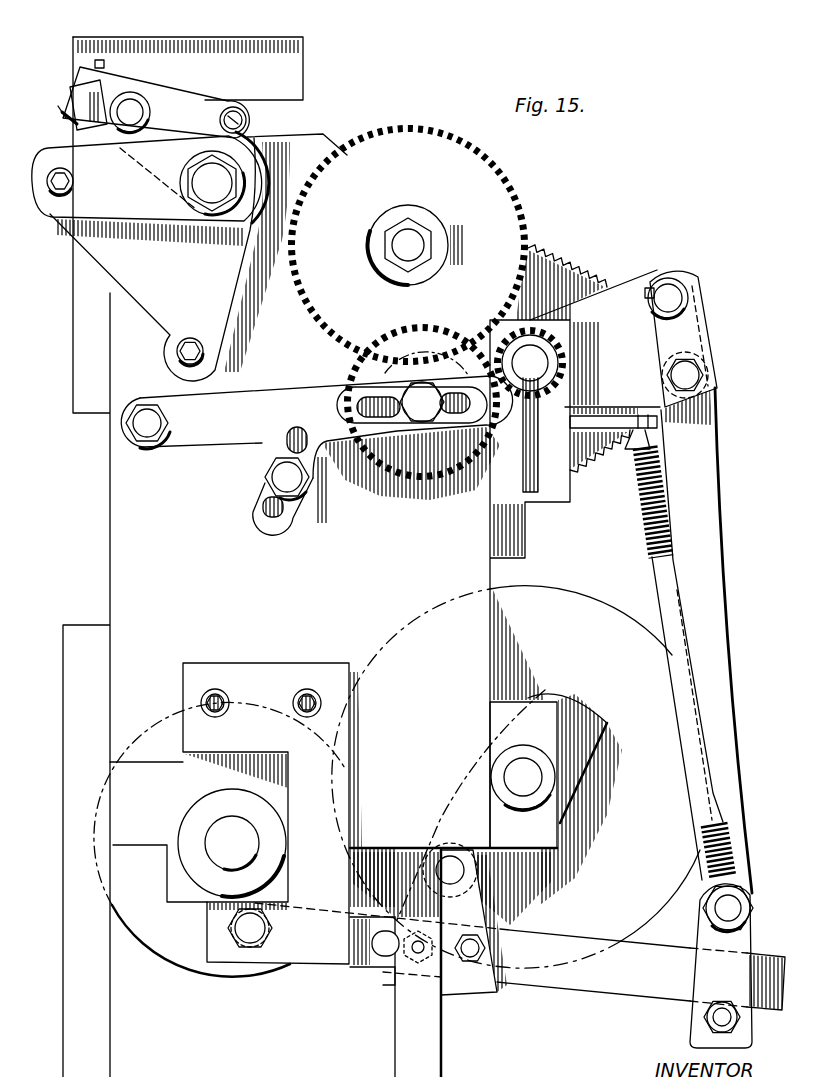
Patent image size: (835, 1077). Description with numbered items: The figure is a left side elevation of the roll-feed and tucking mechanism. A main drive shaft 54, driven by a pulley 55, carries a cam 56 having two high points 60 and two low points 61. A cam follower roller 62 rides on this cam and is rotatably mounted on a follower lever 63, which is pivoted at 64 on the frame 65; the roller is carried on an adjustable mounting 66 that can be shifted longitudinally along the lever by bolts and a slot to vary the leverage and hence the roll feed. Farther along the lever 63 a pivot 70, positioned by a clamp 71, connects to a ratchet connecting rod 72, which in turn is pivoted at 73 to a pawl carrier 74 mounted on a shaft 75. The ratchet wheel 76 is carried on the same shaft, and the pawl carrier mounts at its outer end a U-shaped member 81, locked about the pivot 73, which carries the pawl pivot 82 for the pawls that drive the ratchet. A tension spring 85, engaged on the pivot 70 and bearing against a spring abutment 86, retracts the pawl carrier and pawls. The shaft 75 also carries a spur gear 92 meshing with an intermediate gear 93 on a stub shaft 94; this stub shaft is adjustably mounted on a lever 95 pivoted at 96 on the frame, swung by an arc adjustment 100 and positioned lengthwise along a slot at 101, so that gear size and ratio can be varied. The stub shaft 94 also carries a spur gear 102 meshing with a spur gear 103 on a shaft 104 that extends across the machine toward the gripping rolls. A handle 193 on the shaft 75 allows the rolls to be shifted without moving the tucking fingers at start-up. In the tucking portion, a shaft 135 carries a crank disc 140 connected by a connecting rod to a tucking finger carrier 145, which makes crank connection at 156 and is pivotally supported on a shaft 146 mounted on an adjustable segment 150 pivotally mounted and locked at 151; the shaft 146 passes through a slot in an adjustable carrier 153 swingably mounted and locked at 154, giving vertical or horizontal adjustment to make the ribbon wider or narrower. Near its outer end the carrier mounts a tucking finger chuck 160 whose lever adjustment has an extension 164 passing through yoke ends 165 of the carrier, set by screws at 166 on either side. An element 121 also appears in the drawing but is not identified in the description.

The main drive shaft 54 is at (524, 776).
The pulley 55 is at (598, 600).
The cam 56 is at (586, 703).
The high points 60 is at (592, 723).
The low points 61 is at (472, 750).
The cam follower roller 62 is at (448, 862).
The follower lever 63 is at (600, 985).
The pivot 64 is at (256, 929).
The frame 65 is at (112, 505).
The adjustable mounting 66 is at (378, 952).
The pivot 70 is at (732, 908).
The clamp 71 is at (718, 1017).
The ratchet connecting rod 72 is at (710, 552).
The ratchet connecting rod pivot 73 is at (688, 376).
The pawl carrier 74 is at (634, 359).
The shaft 75 is at (545, 368).
The ratchet wheel 76 is at (565, 266).
The U-shaped member 81 is at (690, 328).
The pawl pivot 82 is at (672, 298).
The tension spring 85 is at (636, 506).
The spring abutment 86 is at (632, 432).
The spur gear 92 is at (560, 344).
The intermediate gear 93 is at (406, 466).
The stub shaft 94 is at (340, 398).
The lever 95 is at (277, 378).
The pivot 96 is at (138, 420).
The arc adjustment 100 is at (283, 476).
The slot 101 is at (420, 400).
The spur gear 102 is at (397, 440).
The spur gear 103 is at (452, 122).
The shaft 104 is at (412, 245).
The bar 121 is at (303, 84).
The shaft 135 is at (230, 841).
The crank disc 140 is at (170, 965).
The tucking finger carrier 145 is at (188, 101).
The shaft 146 is at (205, 194).
The adjustable segment 150 is at (132, 186).
The pivot and lock 151 is at (74, 188).
The adjustable carrier 153 is at (184, 296).
The lock 154 is at (190, 349).
The crank connection 156 is at (246, 125).
The tucking finger chuck 160 is at (133, 110).
The extension 164 is at (76, 100).
The yoke ends 165 is at (70, 121).
The screws 166 is at (104, 64).
The handle 193 is at (528, 470).